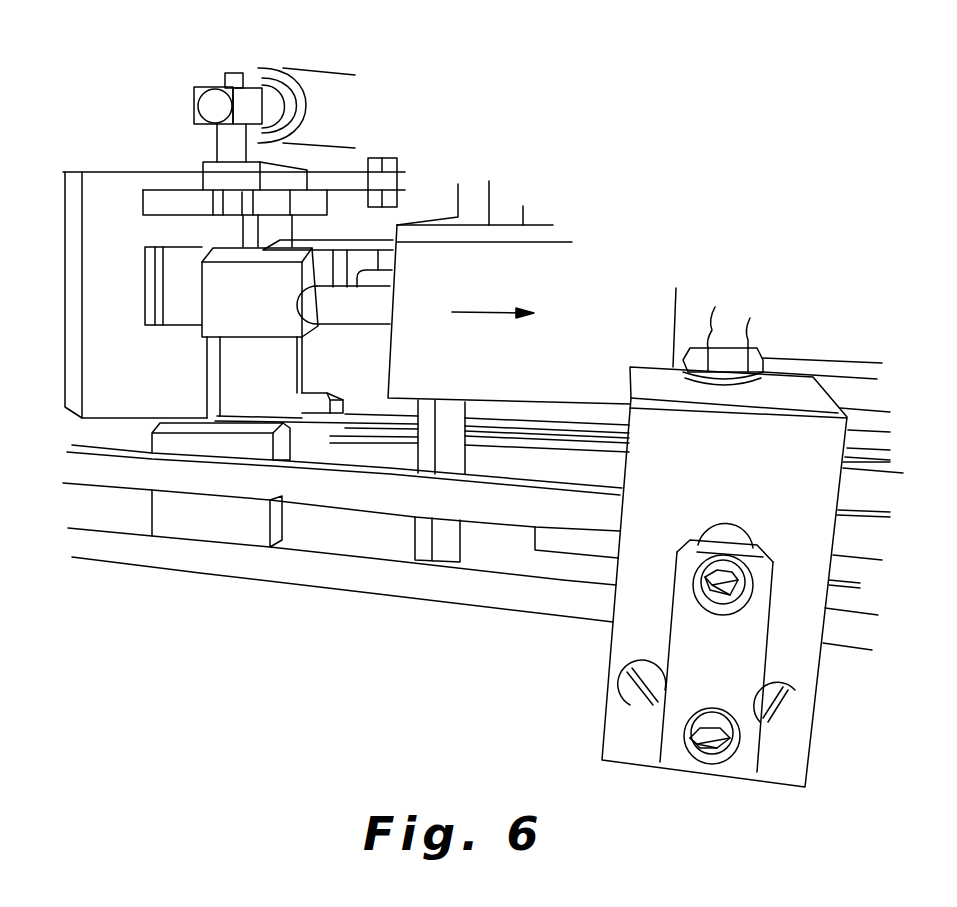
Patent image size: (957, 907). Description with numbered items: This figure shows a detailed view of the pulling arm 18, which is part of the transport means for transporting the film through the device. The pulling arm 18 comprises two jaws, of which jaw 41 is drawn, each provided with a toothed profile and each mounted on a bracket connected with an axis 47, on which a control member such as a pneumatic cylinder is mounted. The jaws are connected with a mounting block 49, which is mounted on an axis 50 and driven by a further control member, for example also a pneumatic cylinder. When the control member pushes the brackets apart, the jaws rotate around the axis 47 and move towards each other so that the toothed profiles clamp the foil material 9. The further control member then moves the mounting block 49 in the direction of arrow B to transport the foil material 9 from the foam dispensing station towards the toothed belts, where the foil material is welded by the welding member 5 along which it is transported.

The welding member 5 is at (632, 640).
The foil material 9 is at (217, 700).
The pulling arm 18 is at (427, 170).
The jaw 41 is at (111, 200).
The axis 47 is at (188, 230).
The mounting block 49 is at (257, 308).
The axis 50 is at (372, 311).